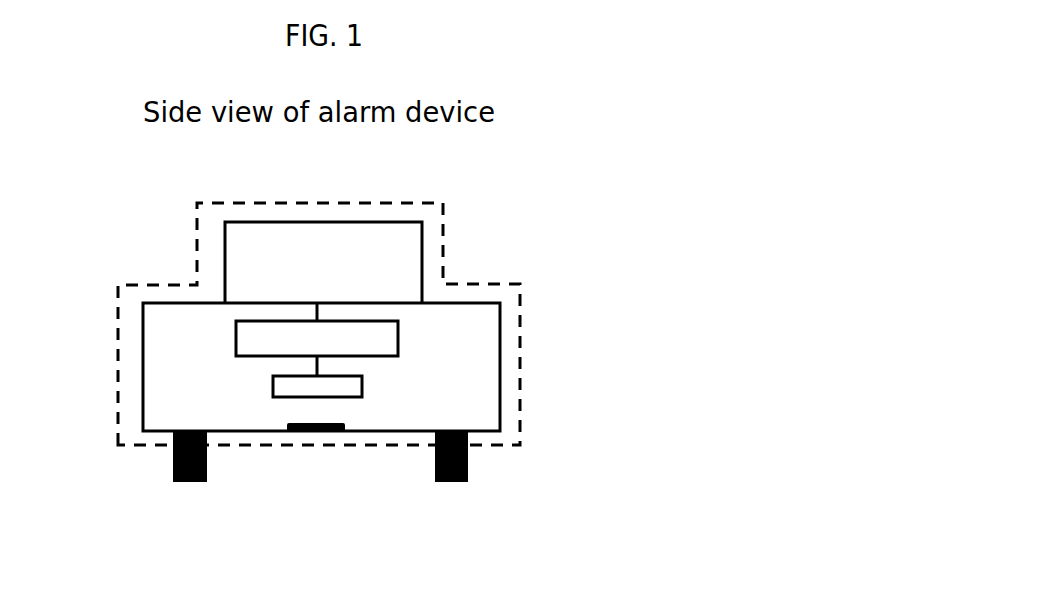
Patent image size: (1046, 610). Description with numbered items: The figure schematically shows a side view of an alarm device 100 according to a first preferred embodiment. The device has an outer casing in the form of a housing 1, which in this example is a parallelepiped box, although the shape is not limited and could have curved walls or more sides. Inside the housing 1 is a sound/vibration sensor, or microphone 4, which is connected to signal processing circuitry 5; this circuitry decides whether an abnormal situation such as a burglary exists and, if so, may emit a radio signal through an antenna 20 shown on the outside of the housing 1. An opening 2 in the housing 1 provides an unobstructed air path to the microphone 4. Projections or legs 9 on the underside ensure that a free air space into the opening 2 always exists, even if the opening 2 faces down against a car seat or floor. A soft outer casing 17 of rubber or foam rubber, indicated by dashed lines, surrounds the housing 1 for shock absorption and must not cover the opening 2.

The alarm device 100 is at (137, 307).
The outer casing 17 is at (117, 423).
The antenna 20 is at (408, 238).
The housing 1 is at (437, 369).
The signal processing circuitry 5 is at (236, 340).
The microphone 4 is at (273, 383).
The opening 2 is at (320, 432).
The legs 9 is at (190, 497).